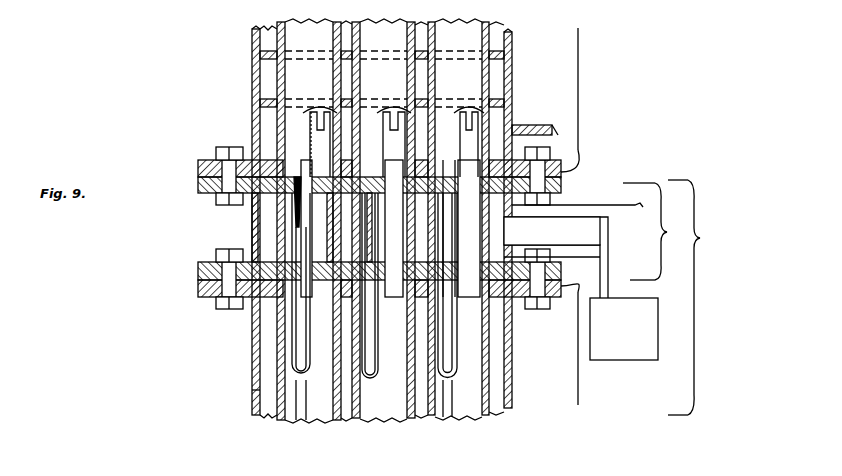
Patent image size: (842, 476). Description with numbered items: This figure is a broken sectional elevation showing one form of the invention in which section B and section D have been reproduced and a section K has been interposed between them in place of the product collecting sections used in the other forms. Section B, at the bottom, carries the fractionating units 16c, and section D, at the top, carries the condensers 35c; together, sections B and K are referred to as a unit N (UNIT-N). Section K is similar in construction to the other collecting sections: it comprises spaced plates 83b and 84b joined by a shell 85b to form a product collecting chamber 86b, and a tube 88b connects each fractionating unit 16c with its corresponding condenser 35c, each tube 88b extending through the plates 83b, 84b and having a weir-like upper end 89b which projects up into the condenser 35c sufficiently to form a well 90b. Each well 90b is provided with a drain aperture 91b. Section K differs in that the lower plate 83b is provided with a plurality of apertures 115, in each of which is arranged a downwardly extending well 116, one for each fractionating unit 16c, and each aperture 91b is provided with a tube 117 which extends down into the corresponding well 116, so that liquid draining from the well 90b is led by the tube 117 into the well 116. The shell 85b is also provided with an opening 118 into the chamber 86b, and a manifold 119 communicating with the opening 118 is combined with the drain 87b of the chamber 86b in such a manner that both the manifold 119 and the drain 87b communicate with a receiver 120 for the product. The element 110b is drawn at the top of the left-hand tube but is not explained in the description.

The condenser 35c is at (505, 66).
The tube 88b is at (352, 232).
The plate 84b is at (198, 185).
The shell 85b is at (252, 222).
The product collecting chamber 86b is at (268, 244).
The plate 83b is at (198, 265).
The aperture 115 is at (252, 262).
The probe fork top 110b is at (319, 110).
The well 90b is at (440, 162).
The aperture 91b is at (296, 192).
The tube 117 is at (292, 356).
The well 116 is at (304, 400).
The fractionating unit 16c is at (256, 394).
The weir-like upper end 89b is at (506, 120).
The manifold 119 is at (588, 205).
The drain 87b is at (553, 256).
The opening 118 is at (552, 231).
The receiver 120 is at (610, 306).
The section K is at (652, 231).
The unit N UNIT-N is at (708, 297).
The section D is at (576, 94).
The section B is at (575, 351).